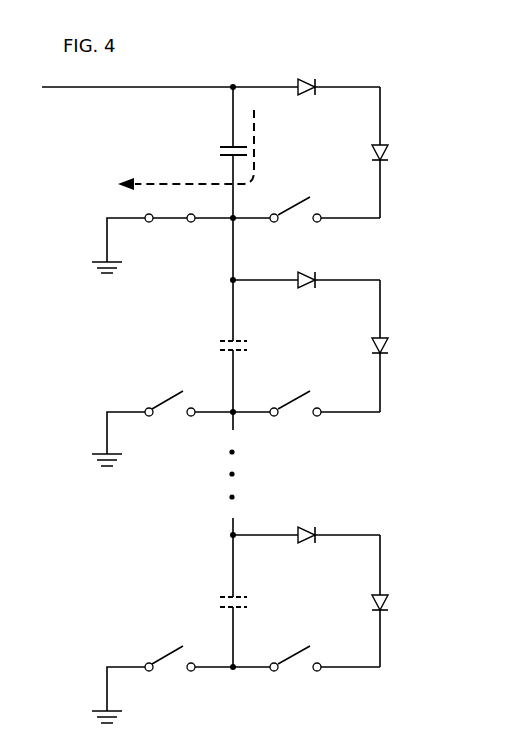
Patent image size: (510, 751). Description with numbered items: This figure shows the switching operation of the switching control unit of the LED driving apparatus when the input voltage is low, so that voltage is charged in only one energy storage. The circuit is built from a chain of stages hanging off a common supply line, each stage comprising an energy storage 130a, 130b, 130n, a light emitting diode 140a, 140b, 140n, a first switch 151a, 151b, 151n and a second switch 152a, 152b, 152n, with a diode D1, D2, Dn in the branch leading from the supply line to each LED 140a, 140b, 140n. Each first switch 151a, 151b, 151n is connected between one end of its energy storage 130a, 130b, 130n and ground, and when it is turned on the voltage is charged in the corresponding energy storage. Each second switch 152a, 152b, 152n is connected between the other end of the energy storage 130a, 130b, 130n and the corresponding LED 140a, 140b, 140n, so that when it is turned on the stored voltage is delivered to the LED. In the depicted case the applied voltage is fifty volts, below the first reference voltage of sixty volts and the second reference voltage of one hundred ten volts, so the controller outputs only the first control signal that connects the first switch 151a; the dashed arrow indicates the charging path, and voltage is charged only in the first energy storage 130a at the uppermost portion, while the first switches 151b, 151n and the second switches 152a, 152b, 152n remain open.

The first energy storage 130a is at (218, 151).
The energy storage 130b is at (248, 345).
The energy storage 130n is at (248, 601).
The LED 140a is at (390, 153).
The LED 140b is at (390, 346).
The LED 140n is at (390, 603).
The first switch 151a is at (162, 243).
The first switch 151b is at (162, 428).
The first switch 151n is at (162, 684).
The second switch 152a is at (306, 225).
The second switch 152b is at (306, 418).
The second switch 152n is at (306, 674).
The diode (first stage) D1 is at (306, 100).
The diode (second stage) D2 is at (306, 293).
The diode (n-th stage) Dn is at (306, 548).